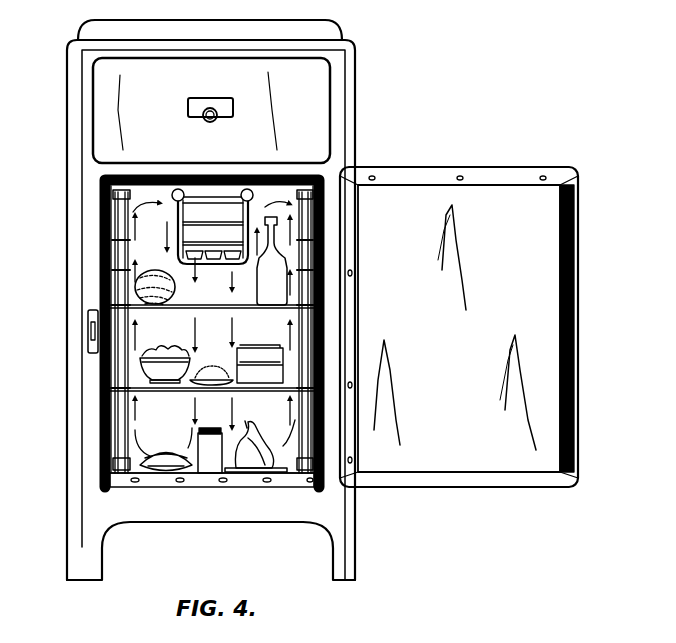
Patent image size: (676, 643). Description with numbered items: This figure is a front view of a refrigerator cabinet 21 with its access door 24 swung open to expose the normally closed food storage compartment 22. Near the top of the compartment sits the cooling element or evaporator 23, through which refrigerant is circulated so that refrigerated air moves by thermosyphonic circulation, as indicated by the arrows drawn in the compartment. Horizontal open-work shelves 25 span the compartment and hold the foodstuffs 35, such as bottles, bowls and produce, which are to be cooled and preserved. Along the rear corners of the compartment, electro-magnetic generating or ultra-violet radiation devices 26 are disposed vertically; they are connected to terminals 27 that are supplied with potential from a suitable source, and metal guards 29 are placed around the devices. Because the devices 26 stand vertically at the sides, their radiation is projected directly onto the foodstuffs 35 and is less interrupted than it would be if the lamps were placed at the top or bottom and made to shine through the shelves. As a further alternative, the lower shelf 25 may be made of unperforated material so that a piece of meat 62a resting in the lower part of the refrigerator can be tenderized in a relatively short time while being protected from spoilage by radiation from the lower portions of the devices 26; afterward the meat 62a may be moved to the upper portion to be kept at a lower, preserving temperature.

The refrigerator cabinet 21 is at (320, 108).
The food storage compartment 22 is at (135, 475).
The cooling element or evaporator 23 is at (209, 263).
The access door 24 is at (477, 466).
The horizontal open-work shelves 25 is at (181, 392).
The ultra-violet radiation devices 26 is at (118, 415).
The terminals 27 is at (112, 195).
The metal guards 29 is at (118, 246).
The foodstuffs 35 is at (155, 302).
The piece of meat 62a is at (249, 462).